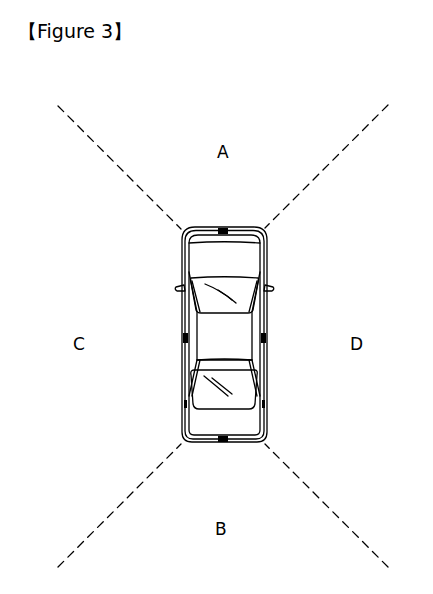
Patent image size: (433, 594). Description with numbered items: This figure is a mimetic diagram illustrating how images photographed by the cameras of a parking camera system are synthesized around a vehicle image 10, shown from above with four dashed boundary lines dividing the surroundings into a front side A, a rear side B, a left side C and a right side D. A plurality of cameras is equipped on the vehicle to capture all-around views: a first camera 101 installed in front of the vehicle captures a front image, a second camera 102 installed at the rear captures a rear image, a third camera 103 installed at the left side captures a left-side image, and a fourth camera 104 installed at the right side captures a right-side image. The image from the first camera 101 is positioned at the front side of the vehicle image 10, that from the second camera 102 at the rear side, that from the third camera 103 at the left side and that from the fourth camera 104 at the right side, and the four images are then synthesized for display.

The vehicle image 10 is at (157, 252).
The first camera 101 is at (223, 231).
The second camera 102 is at (222, 443).
The third camera 103 is at (185, 338).
The fourth camera 104 is at (260, 338).